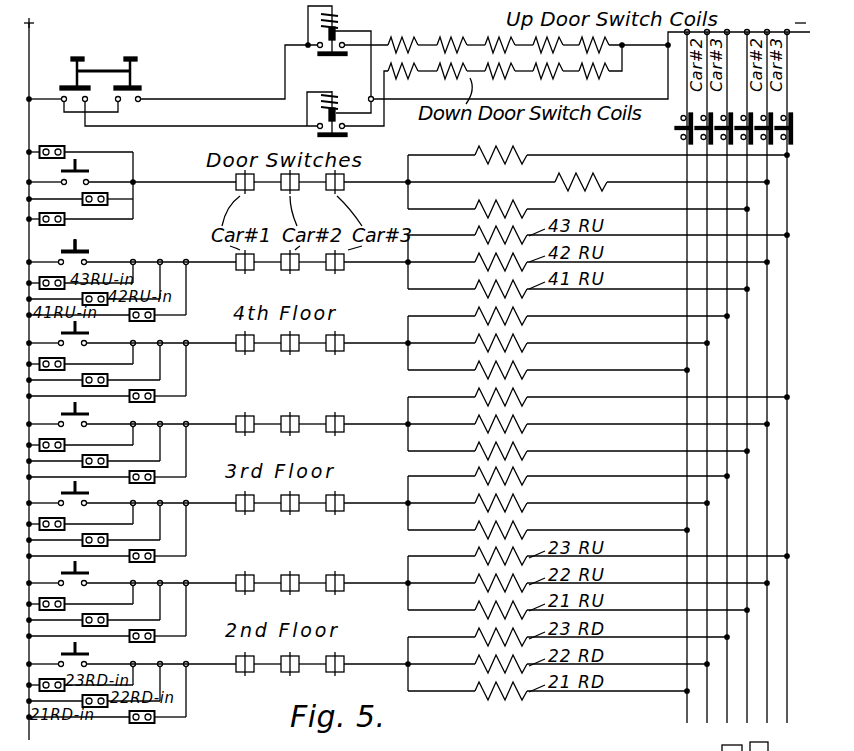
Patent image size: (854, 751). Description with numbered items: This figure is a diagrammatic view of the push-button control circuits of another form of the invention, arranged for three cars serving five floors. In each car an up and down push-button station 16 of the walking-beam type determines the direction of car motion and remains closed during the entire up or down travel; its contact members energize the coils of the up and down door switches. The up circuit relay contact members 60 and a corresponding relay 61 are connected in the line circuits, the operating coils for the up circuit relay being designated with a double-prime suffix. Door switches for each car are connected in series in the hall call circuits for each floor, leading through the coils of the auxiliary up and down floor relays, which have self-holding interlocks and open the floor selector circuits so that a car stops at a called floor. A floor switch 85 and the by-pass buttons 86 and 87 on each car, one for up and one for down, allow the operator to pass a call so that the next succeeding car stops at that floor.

The push-button station 16 is at (96, 70).
The up circuit relay contact members 60 is at (341, 22).
The down door switch relay 61 is at (348, 80).
The floor switch 85 is at (84, 252).
The up by-pass button 86 is at (743, 117).
The down by-pass button 87 is at (683, 117).